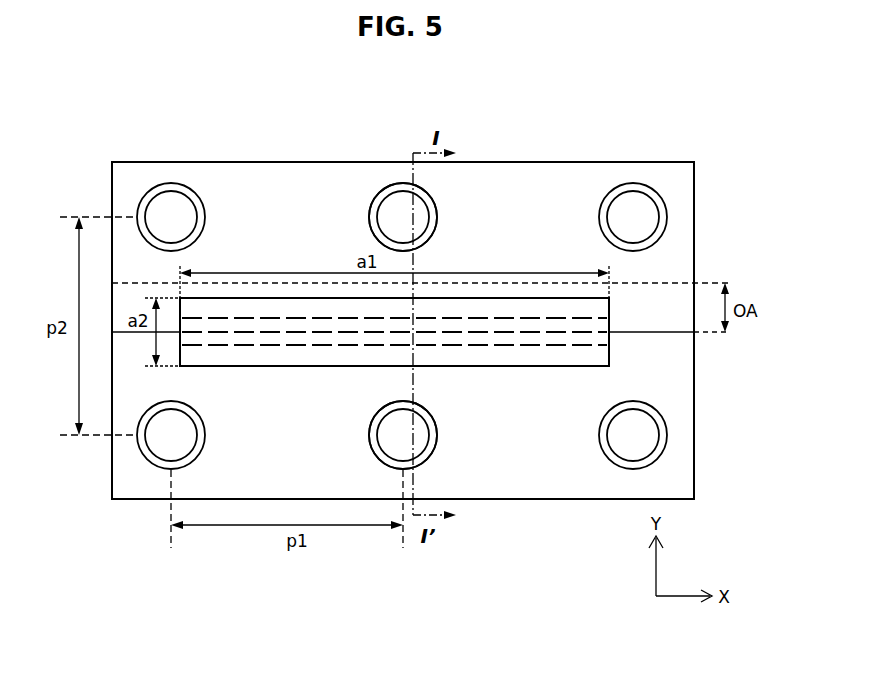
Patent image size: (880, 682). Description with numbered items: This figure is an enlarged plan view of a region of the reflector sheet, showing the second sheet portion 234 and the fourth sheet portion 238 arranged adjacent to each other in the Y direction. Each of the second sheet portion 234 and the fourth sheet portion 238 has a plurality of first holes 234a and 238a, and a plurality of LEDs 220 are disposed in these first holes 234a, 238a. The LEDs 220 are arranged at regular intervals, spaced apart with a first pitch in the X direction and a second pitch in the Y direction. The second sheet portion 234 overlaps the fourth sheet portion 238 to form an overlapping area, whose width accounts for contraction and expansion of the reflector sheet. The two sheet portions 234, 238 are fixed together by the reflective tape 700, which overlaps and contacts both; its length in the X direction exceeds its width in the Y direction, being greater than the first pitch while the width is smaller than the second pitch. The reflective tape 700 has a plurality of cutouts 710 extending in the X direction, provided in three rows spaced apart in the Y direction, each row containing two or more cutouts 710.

The LED 220 is at (171, 205).
The second sheet portion 234 is at (554, 195).
The first hole 234a is at (368, 180).
The fourth sheet portion 238 is at (568, 478).
The first hole 238a is at (448, 459).
The reflective tape 700 is at (482, 298).
The cutout 710 is at (271, 310).